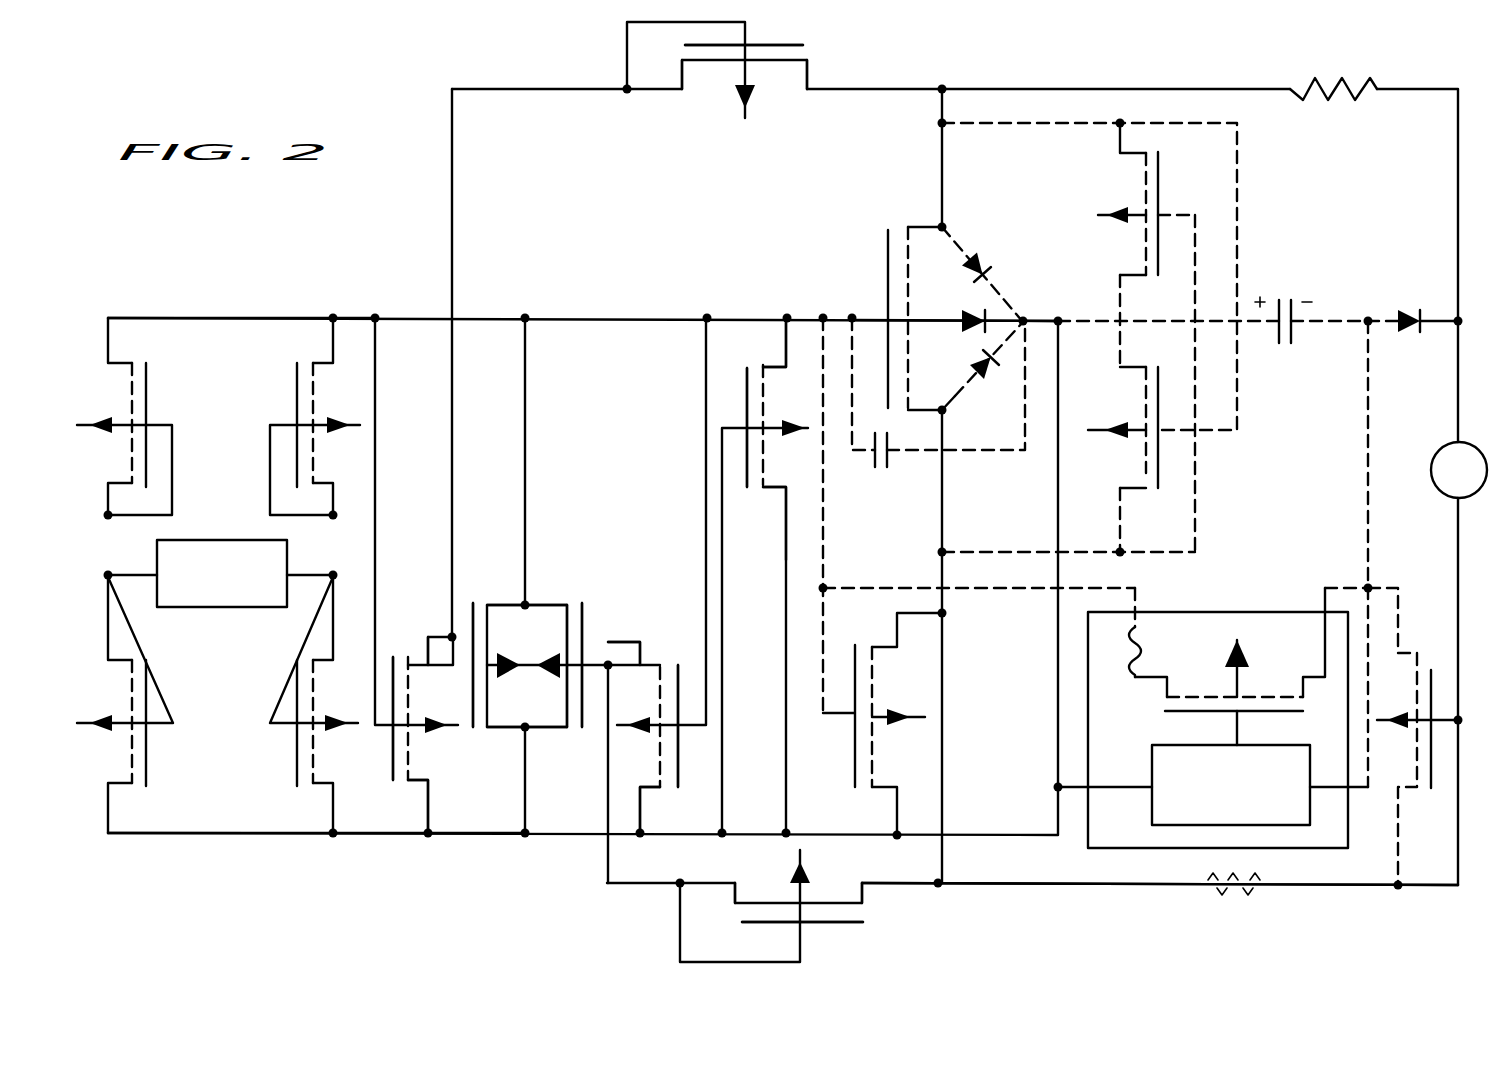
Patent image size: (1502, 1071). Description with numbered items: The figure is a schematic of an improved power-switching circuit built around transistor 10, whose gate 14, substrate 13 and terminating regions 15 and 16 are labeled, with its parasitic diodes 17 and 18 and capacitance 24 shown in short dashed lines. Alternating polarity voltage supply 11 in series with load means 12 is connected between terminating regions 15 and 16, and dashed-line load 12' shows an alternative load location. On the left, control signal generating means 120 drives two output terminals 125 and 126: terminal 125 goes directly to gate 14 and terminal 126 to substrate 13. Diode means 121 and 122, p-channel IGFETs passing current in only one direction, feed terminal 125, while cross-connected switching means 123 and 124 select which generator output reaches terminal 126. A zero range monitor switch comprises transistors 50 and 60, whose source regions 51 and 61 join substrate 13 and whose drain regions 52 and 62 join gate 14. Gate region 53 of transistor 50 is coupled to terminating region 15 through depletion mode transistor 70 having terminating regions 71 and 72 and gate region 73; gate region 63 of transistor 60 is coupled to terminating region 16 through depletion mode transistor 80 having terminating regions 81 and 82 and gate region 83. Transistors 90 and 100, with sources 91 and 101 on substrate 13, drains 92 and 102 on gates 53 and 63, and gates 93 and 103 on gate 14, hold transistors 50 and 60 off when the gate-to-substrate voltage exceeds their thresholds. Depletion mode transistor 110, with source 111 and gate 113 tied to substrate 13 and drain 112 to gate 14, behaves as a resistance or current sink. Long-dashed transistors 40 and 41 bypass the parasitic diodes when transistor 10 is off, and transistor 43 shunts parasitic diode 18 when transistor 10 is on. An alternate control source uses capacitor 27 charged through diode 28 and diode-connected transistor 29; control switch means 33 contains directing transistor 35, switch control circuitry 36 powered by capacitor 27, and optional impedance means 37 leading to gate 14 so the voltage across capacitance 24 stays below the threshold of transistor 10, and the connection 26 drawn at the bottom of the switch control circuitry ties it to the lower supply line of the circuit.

The transistor 10 is at (950, 305).
The alternating polarity voltage supply 11 is at (1478, 448).
The load means 12 is at (1351, 67).
The load 12' is at (1252, 905).
The substrate 13 is at (1028, 315).
The gate 14 is at (886, 244).
The terminating region 15 is at (946, 225).
The terminating region 16 is at (946, 413).
The parasitic diode 17 is at (992, 262).
The parasitic diode 18 is at (1002, 377).
The capacitance 24 is at (882, 473).
The connection line 26 is at (1205, 825).
The capacitor 27 is at (1287, 300).
The diode 28 is at (1408, 312).
The transistor 29 is at (1408, 693).
The control switch means 33 is at (1232, 610).
The primary directing transistor 35 is at (1295, 657).
The switch control circuitry 36 is at (1150, 775).
The impedance means 37 is at (1130, 662).
The transistor 40 is at (1130, 197).
The transistor 41 is at (1130, 410).
The transistor 43 is at (915, 695).
The transistor 50 is at (521, 642).
The terminating region 51 is at (510, 730).
The terminating region 52 is at (508, 603).
The gate region 53 is at (473, 610).
The transistor 60 is at (560, 642).
The terminating region 61 is at (545, 730).
The terminating region 62 is at (552, 603).
The gate region 63 is at (583, 620).
The transistor 70 is at (727, 117).
The terminating region 71 is at (670, 90).
The terminating region 72 is at (837, 88).
The gate region 73 is at (780, 45).
The transistor 80 is at (857, 875).
The terminating region 81 is at (737, 890).
The terminating region 82 is at (863, 895).
The gate region 83 is at (827, 923).
The transistor 90 is at (428, 717).
The terminating region 91 is at (415, 790).
The terminating region 92 is at (425, 645).
The gate region 93 is at (392, 752).
The transistor 100 is at (657, 713).
The terminating region 101 is at (647, 790).
The terminating region 102 is at (642, 660).
The gate region 103 is at (680, 760).
The transistor 110 is at (812, 413).
The terminating region 111 is at (773, 493).
The terminating region 112 is at (777, 368).
The gate region 113 is at (747, 390).
The control signal generating means 120 is at (233, 540).
The diode means 121 is at (115, 407).
The diode means 122 is at (362, 403).
The switching means 123 is at (112, 705).
The switching means 124 is at (363, 705).
The output terminal 125 is at (335, 317).
The output terminal 126 is at (333, 837).